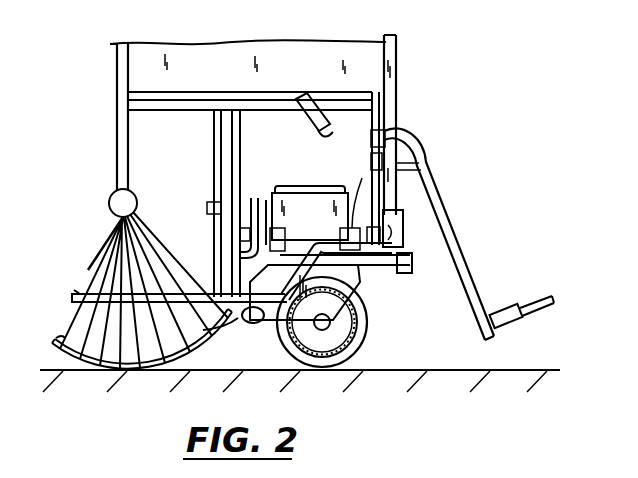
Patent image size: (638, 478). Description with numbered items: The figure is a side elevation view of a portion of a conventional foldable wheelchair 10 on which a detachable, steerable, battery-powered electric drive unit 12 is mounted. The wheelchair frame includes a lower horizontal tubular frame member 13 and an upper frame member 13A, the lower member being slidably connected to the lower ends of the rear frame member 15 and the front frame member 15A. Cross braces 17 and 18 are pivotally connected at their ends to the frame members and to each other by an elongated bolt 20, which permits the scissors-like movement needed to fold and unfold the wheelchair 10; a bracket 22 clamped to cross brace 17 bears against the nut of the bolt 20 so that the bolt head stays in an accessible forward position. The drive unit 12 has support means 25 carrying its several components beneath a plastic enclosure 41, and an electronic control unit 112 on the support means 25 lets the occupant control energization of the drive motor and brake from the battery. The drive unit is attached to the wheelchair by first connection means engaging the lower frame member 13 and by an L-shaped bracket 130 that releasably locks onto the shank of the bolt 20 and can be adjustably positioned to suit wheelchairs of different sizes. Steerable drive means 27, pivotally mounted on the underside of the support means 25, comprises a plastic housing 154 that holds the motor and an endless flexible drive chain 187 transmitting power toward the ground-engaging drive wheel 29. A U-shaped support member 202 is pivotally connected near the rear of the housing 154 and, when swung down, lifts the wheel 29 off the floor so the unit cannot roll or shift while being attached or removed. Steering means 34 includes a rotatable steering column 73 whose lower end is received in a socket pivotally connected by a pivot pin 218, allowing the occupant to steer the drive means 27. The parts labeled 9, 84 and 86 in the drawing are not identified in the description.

The foldable wheelchair 10 is at (415, 54).
The rear frame member 15 is at (117, 108).
The upper frame member 13A is at (153, 103).
The cross brace 17 is at (213, 131).
The cross brace 18 is at (241, 134).
The bracket 22 is at (208, 205).
The electronic control unit 112 is at (267, 200).
The elongated bolt 20 is at (253, 200).
The lower horizontal tubular frame member 13 is at (330, 230).
The housing cover 9 is at (304, 186).
The control cable 86 is at (351, 208).
The L-shaped bracket 130 is at (240, 234).
The plastic housing 154 is at (255, 262).
The U-shaped support member 202 is at (250, 324).
The steering column 73 is at (397, 42).
The front frame member 15A is at (378, 100).
The steering means 34 is at (408, 207).
The pivot pin 218 is at (402, 230).
The support means 25 is at (418, 237).
The mounting block 84 is at (363, 260).
The plastic enclosure 41 is at (415, 268).
The electric drive unit 12 is at (380, 320).
The steerable drive means 27 is at (368, 293).
The drive wheel 29 is at (367, 346).
The drive chain 187 is at (297, 348).